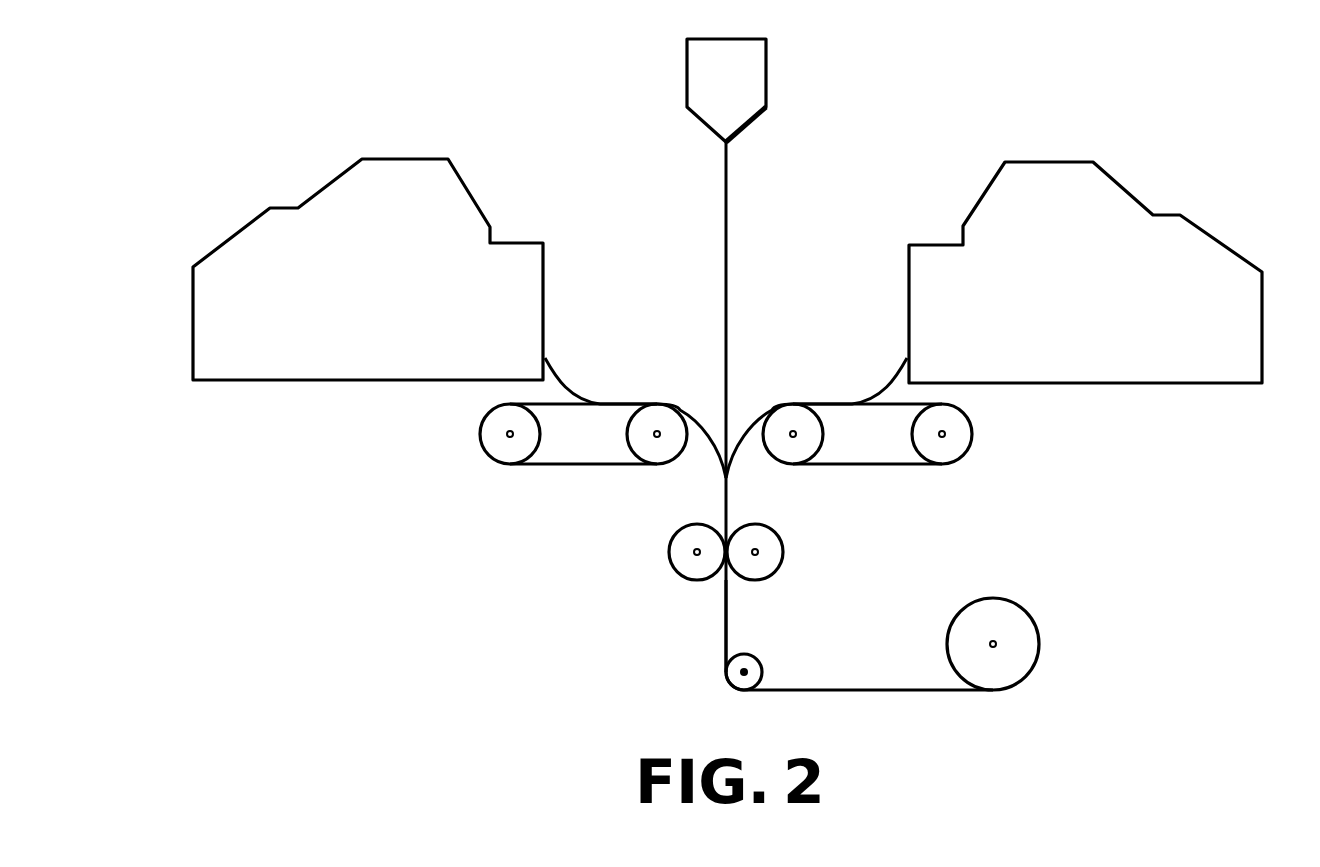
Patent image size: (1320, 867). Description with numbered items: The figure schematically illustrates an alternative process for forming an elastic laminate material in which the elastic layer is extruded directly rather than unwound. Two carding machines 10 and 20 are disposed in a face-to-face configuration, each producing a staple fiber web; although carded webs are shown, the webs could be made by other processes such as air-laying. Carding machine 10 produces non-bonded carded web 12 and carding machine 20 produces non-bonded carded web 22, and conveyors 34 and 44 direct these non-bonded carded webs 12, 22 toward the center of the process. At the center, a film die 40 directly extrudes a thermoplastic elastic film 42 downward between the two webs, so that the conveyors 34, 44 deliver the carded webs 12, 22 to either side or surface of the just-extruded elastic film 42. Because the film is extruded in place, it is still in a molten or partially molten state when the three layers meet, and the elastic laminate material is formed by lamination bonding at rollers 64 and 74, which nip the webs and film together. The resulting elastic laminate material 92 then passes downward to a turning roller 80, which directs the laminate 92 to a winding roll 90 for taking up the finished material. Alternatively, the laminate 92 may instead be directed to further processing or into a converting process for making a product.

The carding machine 10 is at (329, 185).
The non-bonded carded web 12 is at (549, 360).
The carding machine 20 is at (984, 190).
The non-bonded carded web 22 is at (903, 360).
The conveyor 34 is at (541, 465).
The film die 40 is at (767, 72).
The elastic film 42 is at (727, 213).
The conveyor 44 is at (914, 465).
The roller 64 is at (667, 549).
The roller 74 is at (785, 552).
The turning roller 80 is at (758, 655).
The winding roll 90 is at (1039, 625).
The elastic laminate material 92 is at (724, 615).